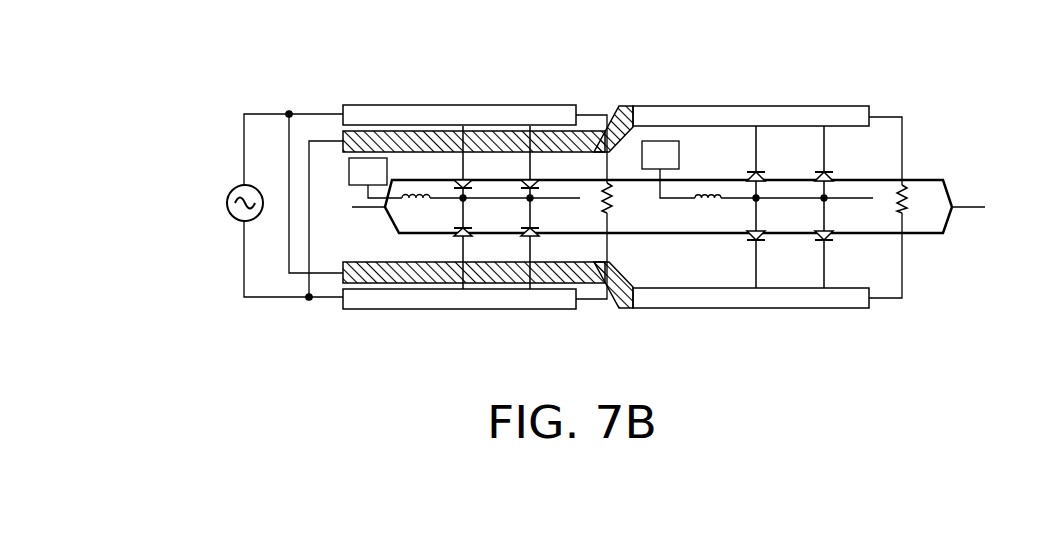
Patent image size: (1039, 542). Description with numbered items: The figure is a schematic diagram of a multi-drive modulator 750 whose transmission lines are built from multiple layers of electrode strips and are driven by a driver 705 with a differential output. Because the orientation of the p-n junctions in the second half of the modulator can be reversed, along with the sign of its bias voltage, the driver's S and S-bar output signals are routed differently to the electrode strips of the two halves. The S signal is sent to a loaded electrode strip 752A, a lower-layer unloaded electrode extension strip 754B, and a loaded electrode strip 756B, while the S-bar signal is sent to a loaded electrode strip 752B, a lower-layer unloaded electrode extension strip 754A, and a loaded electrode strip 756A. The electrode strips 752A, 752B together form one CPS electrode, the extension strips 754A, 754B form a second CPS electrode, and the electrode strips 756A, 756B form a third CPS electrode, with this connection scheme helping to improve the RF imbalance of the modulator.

The driver 705 is at (243, 185).
The modulator 750 is at (822, 38).
The loaded electrode strip 752A is at (493, 105).
The loaded electrode strip 752B is at (472, 310).
The lower-layer unloaded electrode extension strip 754A is at (600, 128).
The lower-layer unloaded electrode extension strip 754B is at (610, 300).
The loaded electrode strip 756A is at (760, 107).
The loaded electrode strip 756B is at (768, 310).